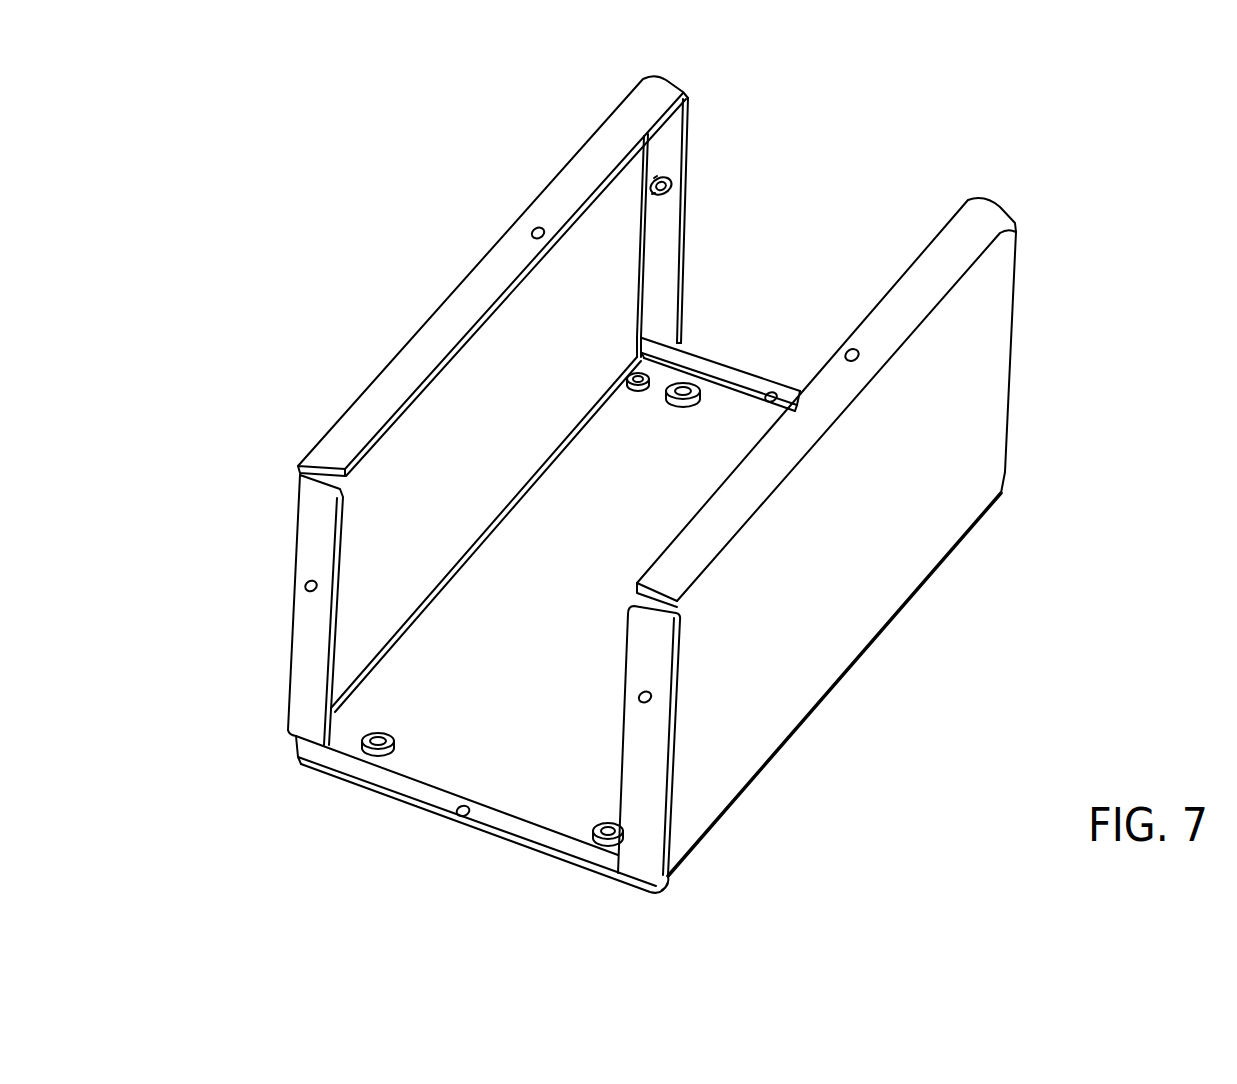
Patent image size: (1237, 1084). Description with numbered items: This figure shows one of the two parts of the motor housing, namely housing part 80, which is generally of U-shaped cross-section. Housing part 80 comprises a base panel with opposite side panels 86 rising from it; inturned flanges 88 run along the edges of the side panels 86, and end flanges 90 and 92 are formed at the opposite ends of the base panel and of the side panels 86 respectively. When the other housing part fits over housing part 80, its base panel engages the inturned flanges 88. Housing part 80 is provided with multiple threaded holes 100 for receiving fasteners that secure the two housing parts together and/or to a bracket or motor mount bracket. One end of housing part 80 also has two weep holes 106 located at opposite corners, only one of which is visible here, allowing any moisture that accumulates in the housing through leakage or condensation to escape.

The housing part 80 is at (300, 375).
The side panels 86 is at (610, 270).
The inturned flanges 88 is at (450, 331).
The end flanges 90 is at (745, 387).
The end flanges 92 is at (668, 212).
The threaded holes 100 is at (538, 227).
The weep holes 106 is at (638, 392).